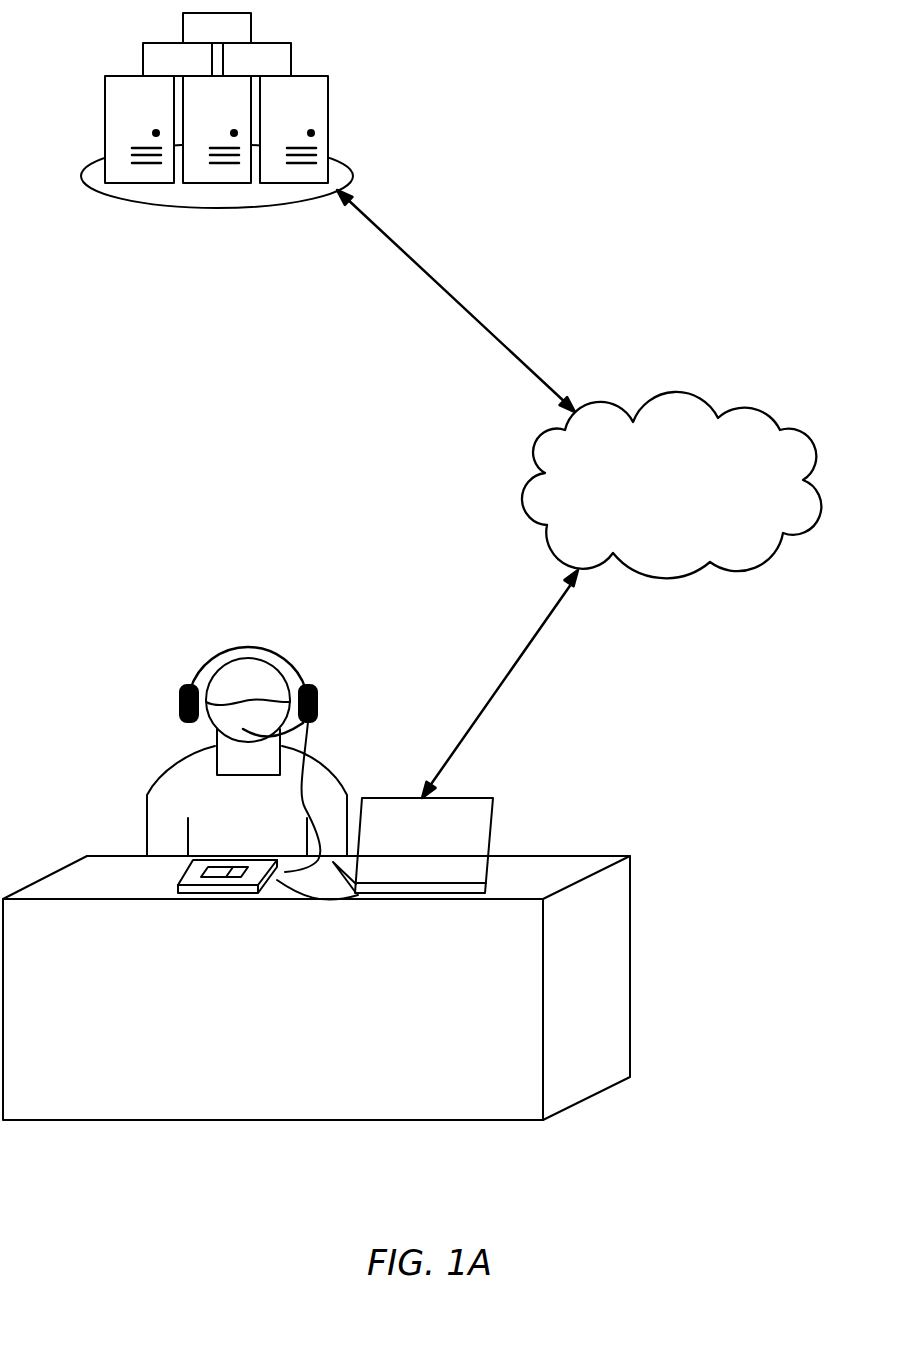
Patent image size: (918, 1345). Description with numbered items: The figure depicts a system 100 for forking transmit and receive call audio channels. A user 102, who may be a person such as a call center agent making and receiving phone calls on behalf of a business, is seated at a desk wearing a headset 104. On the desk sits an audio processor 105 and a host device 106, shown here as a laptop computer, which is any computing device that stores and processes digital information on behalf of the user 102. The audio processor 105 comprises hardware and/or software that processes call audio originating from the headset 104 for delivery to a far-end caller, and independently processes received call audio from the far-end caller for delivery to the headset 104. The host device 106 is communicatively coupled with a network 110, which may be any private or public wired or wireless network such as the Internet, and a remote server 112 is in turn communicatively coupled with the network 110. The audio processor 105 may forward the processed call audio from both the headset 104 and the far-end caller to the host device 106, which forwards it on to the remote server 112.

The system 100 is at (797, 1072).
The user 102 is at (147, 797).
The headset 104 is at (278, 651).
The audio processor 105 is at (178, 884).
The host device 106 is at (494, 799).
The network 110 is at (653, 514).
The remote server 112 is at (103, 149).